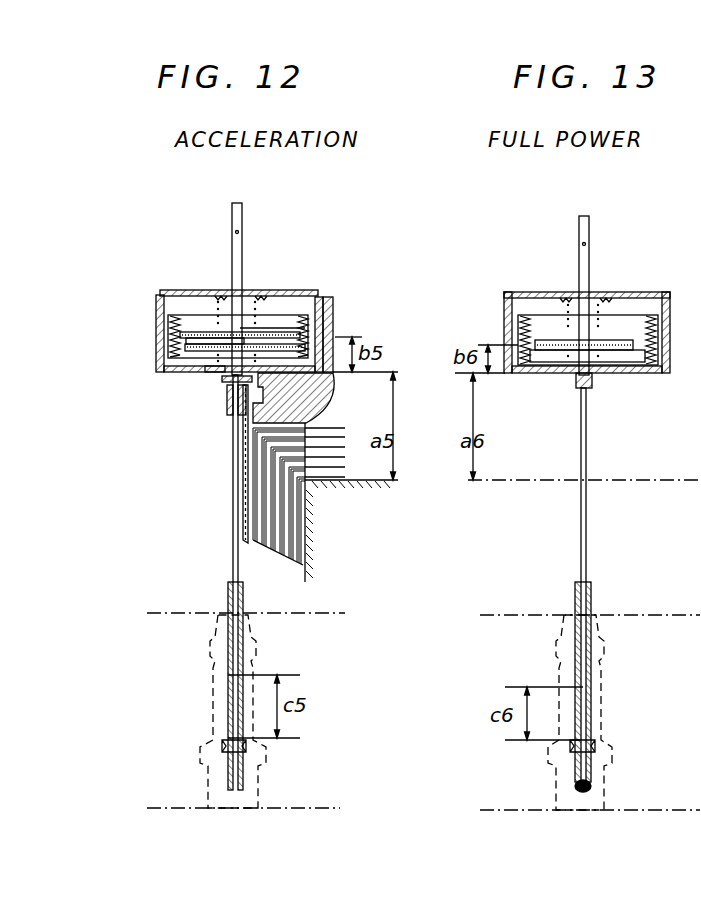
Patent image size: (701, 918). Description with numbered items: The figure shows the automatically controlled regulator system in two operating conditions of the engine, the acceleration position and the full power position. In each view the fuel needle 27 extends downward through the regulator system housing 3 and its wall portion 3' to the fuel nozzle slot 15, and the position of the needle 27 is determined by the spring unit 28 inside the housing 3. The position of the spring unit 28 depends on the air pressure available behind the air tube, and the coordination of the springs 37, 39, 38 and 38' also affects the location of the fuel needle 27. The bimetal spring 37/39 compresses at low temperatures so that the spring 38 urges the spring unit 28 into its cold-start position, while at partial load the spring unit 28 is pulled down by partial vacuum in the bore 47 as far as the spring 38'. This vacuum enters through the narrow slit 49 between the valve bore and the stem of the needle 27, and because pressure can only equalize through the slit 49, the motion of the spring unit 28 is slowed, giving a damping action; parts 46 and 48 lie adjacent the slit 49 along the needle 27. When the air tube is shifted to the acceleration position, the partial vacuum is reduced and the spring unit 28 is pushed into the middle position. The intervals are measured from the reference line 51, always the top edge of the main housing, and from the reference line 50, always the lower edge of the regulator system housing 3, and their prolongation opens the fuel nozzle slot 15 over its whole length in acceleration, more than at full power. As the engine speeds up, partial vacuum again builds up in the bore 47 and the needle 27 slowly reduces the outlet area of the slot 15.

In FIG. 12, the regulator system housing 3 is at (257, 322).
In FIG. 12, the regulator system housing portion 3' is at (345, 334).
In FIG. 12, the fuel nozzle slot 15 is at (230, 697).
In FIG. 12, the fuel needle 27 is at (233, 560).
In FIG. 12, the spring unit 28 is at (197, 330).
In FIG. 12, the bimetal spring 37 is at (227, 290).
In FIG. 12, the bimetal spring 39 is at (241, 290).
In FIG. 12, the spring 38 is at (172, 338).
In FIG. 12, the spring 38' is at (195, 390).
In FIG. 12, the bushing 46 is at (226, 398).
In FIG. 12, the bore 47 is at (242, 520).
In FIG. 12, the bushing 48 is at (242, 425).
In FIG. 12, the narrow slit 49 is at (228, 415).
In FIG. 12, the reference line 50 is at (391, 372).
In FIG. 13, the reference line 50 is at (457, 372).
In FIG. 12, the reference line 51 is at (402, 480).